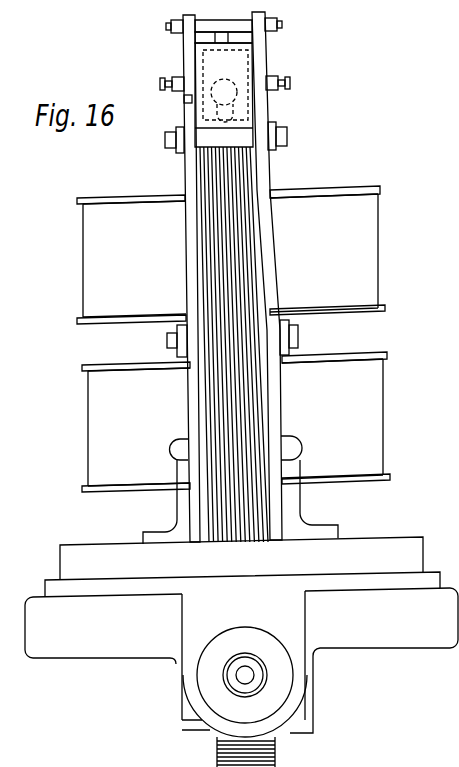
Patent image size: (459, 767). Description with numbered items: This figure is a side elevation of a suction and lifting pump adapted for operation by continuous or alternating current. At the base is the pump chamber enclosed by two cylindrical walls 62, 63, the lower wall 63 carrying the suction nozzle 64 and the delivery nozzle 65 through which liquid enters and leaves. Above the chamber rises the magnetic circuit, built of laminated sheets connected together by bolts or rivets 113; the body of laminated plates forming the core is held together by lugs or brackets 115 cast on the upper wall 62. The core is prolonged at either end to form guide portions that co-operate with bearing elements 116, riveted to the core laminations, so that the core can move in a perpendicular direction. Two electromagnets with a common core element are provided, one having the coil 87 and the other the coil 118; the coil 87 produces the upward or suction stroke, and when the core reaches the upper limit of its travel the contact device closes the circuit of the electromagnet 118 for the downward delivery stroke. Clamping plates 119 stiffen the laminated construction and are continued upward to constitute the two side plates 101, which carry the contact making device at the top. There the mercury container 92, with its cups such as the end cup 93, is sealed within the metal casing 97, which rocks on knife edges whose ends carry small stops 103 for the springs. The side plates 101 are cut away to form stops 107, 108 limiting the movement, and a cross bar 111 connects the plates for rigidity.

The upper cylindrical wall 62 is at (399, 546).
The lower cylindrical wall 63 is at (241, 662).
The suction nozzle 64 is at (275, 761).
The delivery nozzle 65 is at (248, 679).
The coil 87 is at (131, 259).
The container 92 is at (235, 99).
The end cup 93 is at (226, 113).
The metal casing 97 is at (196, 59).
The side plates 101 is at (186, 180).
The stops 103 is at (176, 95).
The stop 107 is at (186, 112).
The stop 108 is at (172, 81).
The cross bar 111 is at (245, 25).
The bolts or rivets 113 is at (287, 140).
The lugs or brackets 115 is at (177, 518).
The bearing elements 116 is at (167, 341).
The coil 118 is at (136, 427).
The clamping plates 119 is at (186, 219).